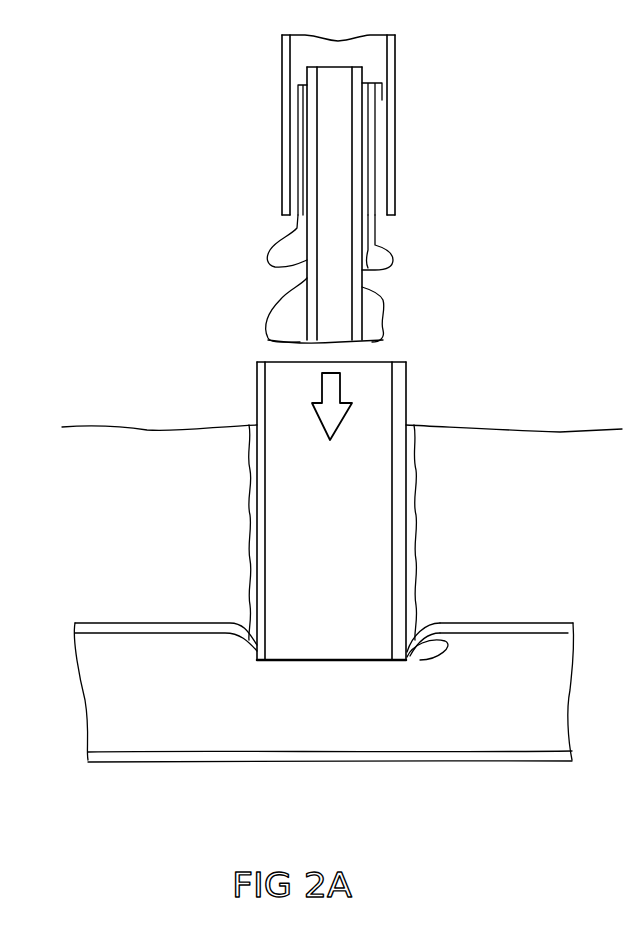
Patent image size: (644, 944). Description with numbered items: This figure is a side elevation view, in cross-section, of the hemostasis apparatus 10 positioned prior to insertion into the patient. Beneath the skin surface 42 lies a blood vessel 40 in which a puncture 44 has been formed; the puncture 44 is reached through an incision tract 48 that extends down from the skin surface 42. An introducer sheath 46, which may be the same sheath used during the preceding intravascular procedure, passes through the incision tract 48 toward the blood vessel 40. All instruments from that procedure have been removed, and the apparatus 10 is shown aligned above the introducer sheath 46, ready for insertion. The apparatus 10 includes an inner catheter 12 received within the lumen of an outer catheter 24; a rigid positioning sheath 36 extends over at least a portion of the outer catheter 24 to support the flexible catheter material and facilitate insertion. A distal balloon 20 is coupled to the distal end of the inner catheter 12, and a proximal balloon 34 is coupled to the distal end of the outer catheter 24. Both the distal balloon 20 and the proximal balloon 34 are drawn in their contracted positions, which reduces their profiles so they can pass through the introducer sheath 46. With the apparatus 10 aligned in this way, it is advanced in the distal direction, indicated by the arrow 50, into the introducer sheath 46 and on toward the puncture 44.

The hemostasis apparatus 10 is at (410, 115).
The inner catheter 12 is at (358, 73).
The outer catheter 24 is at (303, 167).
The positioning sheath 36 is at (388, 180).
The proximal balloon 34 is at (387, 253).
The distal balloon 20 is at (383, 318).
The skin surface 42 is at (132, 428).
The arrow 50 is at (330, 398).
The introducer sheath 46 is at (407, 503).
The incision tract 48 is at (248, 510).
The puncture 44 is at (460, 637).
The blood vessel 40 is at (165, 757).